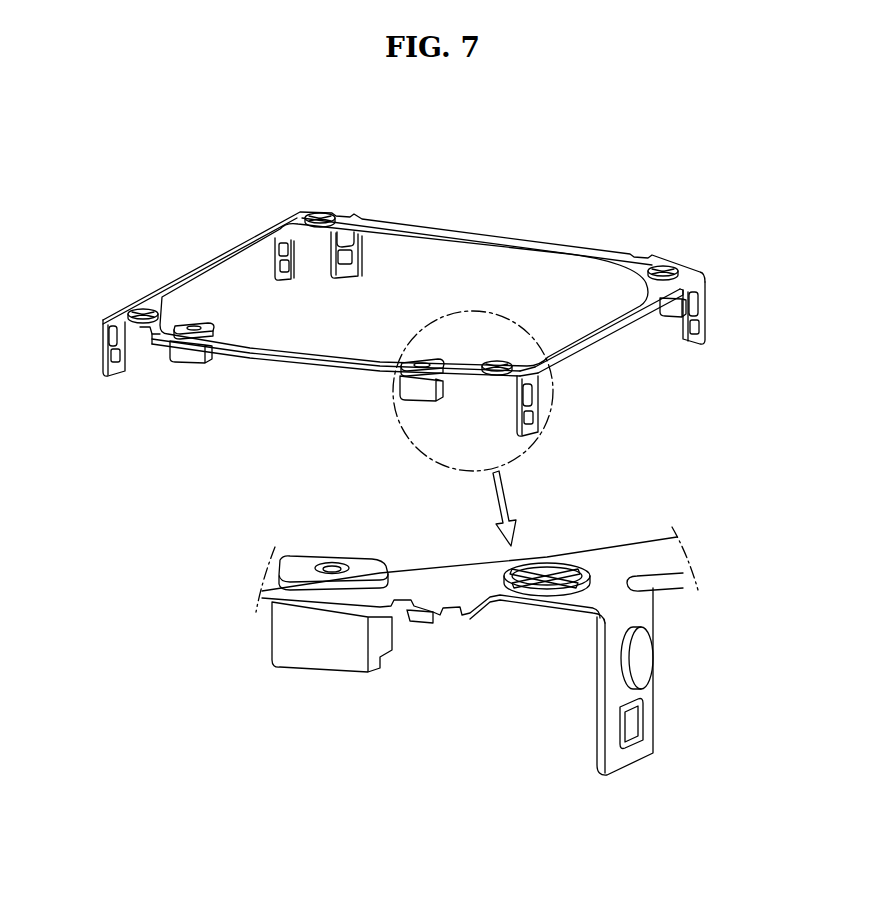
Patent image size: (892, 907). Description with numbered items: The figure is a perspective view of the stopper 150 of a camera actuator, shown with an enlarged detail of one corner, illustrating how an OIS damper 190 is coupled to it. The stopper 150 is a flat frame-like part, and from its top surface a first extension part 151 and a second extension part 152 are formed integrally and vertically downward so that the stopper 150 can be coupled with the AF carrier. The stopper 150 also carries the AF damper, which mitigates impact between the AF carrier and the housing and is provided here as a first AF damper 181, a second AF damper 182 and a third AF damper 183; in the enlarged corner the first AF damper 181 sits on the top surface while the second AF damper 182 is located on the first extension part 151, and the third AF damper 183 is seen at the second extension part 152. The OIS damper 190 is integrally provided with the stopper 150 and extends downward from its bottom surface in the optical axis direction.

The stopper 150 is at (404, 290).
The first extension part 151 is at (686, 681).
The second extension part 152 is at (372, 286).
The first AF damper 181 is at (573, 570).
The second AF damper 182 is at (644, 657).
The third AF damper 183 is at (348, 241).
The OIS damper 190 is at (323, 645).